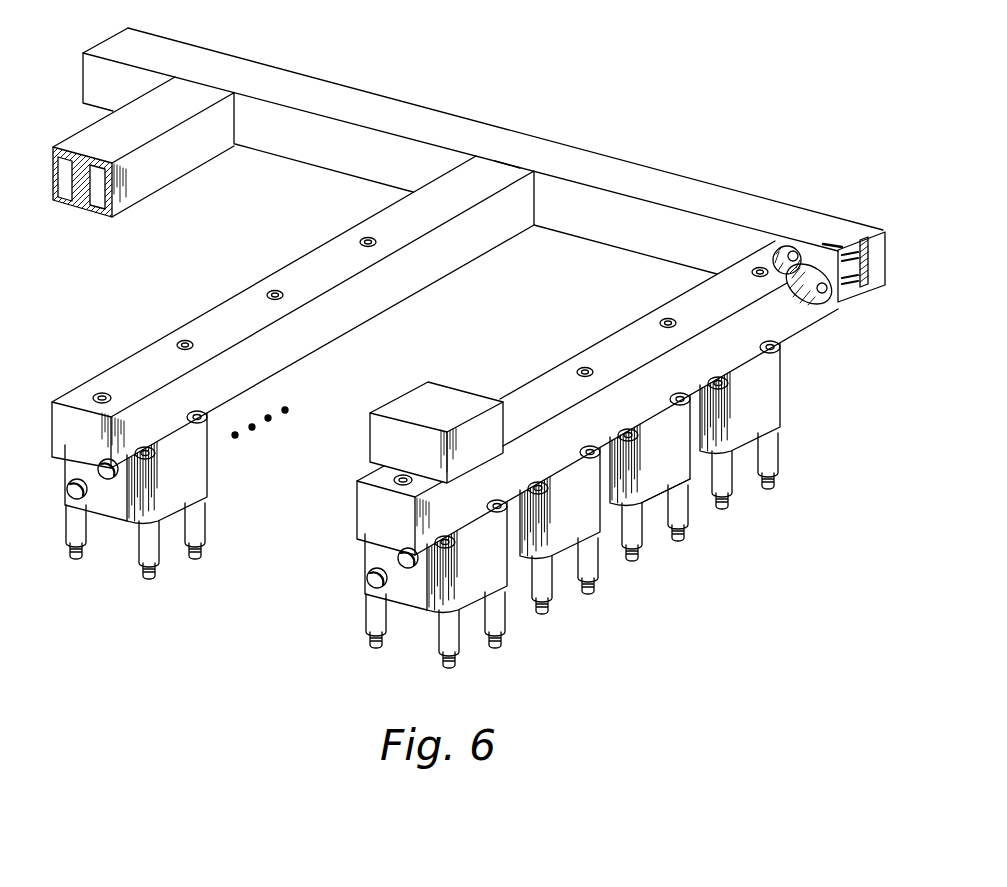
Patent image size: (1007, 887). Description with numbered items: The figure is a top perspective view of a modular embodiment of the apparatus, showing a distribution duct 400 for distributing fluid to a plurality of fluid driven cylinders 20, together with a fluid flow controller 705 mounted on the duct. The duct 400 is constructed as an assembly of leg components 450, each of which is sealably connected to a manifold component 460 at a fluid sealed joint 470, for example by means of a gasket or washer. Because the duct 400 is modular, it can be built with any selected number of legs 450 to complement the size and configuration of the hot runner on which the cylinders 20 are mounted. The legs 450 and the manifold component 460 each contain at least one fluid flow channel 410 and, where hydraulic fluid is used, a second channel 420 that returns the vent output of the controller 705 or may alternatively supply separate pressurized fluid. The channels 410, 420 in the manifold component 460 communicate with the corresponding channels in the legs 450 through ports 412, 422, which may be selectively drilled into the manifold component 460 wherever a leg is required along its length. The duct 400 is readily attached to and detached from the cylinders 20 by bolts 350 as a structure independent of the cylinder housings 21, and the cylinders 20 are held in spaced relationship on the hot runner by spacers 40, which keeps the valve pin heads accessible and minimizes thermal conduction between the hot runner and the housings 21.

The distribution duct 400 is at (173, 286).
The manifold component 460 is at (674, 180).
The leg components 450 is at (180, 158).
The fluid sealed joint 470 is at (508, 164).
The second channel 420 is at (62, 198).
The fluid flow channel 410 is at (90, 207).
The port 422 is at (802, 248).
The port 412 is at (828, 304).
The bolts 350 is at (585, 366).
The controller 705 is at (393, 402).
The cylinders 20 is at (212, 472).
The cylinder housings 21 is at (690, 468).
The spacers 40 is at (779, 443).